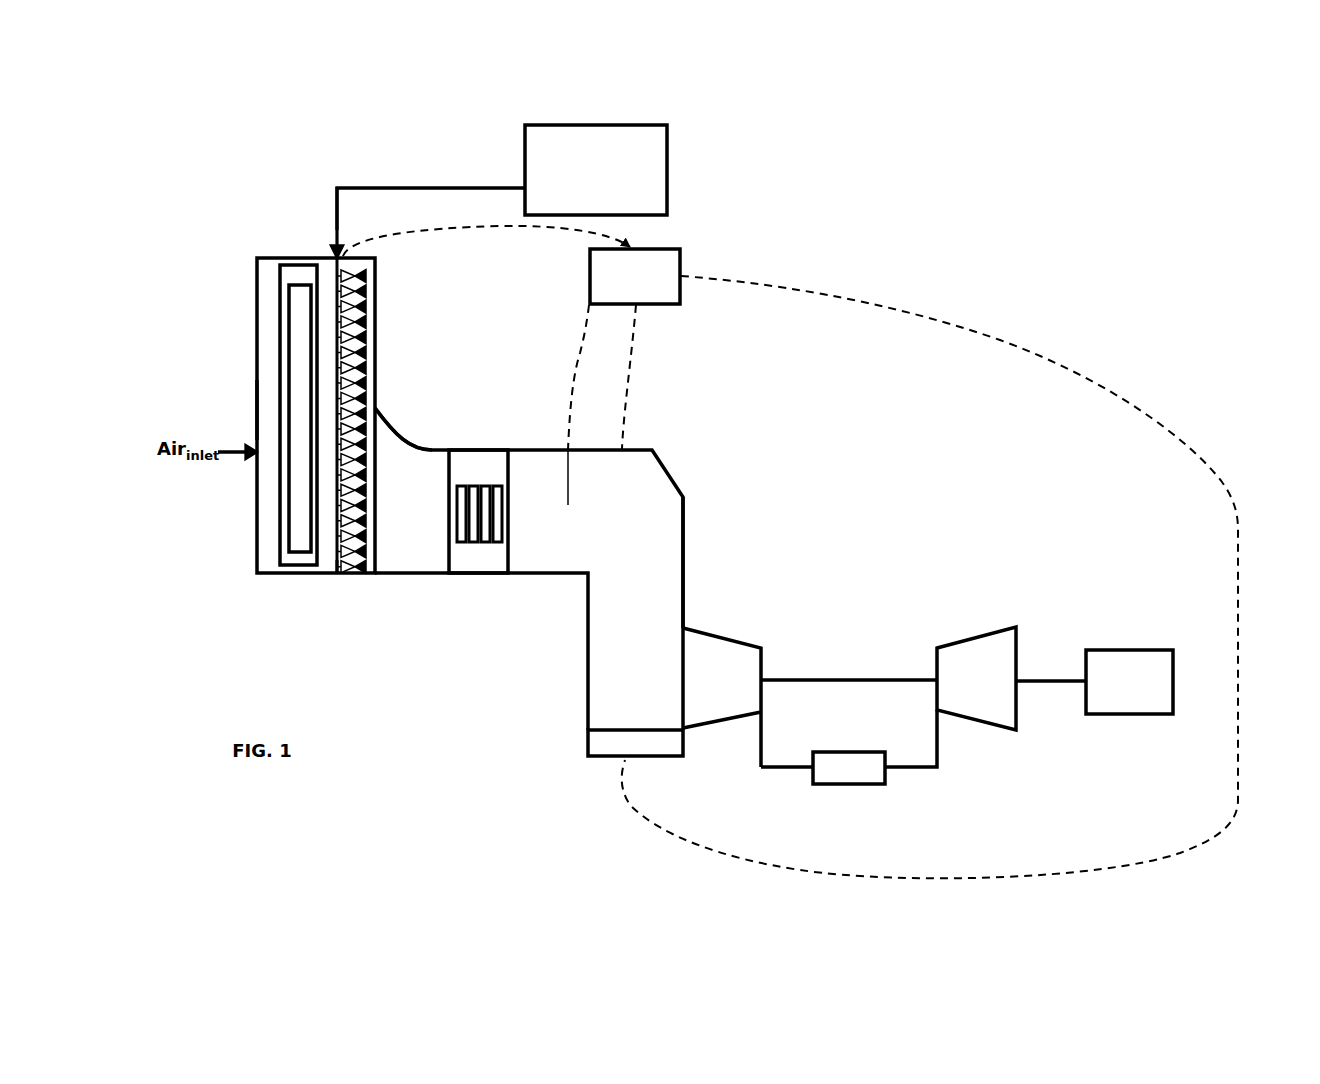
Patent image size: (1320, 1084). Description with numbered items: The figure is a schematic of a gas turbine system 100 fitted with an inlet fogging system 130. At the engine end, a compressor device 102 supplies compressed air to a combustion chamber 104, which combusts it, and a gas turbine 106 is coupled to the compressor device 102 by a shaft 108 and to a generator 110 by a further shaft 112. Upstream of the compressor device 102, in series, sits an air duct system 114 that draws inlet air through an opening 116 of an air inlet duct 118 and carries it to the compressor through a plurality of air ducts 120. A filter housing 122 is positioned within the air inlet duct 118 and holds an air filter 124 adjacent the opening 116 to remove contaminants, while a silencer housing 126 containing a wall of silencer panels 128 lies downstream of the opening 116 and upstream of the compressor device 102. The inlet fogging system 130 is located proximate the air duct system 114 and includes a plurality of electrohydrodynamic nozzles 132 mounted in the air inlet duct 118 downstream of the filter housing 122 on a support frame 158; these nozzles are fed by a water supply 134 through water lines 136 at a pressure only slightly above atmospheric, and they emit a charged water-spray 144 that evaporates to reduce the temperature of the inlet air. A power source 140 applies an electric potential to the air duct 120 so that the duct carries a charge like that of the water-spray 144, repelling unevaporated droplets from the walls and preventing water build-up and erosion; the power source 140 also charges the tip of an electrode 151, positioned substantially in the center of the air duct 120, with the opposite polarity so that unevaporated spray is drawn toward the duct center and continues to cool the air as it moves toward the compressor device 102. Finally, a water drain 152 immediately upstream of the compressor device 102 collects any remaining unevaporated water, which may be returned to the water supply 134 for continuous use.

The gas turbine system 100 is at (796, 248).
The compressor device 102 is at (728, 700).
The combustion chamber 104 is at (848, 765).
The gas turbine 106 is at (988, 705).
The shaft 108 is at (845, 680).
The generator 110 is at (1142, 700).
The shaft 112 is at (1040, 681).
The air duct system 114 is at (478, 336).
The opening 116 is at (255, 408).
The air inlet duct 118 is at (262, 278).
The air ducts 120 is at (400, 553).
The filter housing 122 is at (303, 277).
The air filter 124 is at (295, 345).
The silencer housing 126 is at (477, 466).
The silencer panels 128 is at (488, 542).
The inlet fogging system 130 is at (333, 118).
The electrohydrodynamic (EHD) nozzles 132 is at (347, 570).
The water supply 134 is at (596, 170).
The water lines 136 is at (415, 188).
The power source 140 is at (624, 349).
The water-spray 144 is at (368, 320).
The electrode 151 is at (568, 483).
The water drain 152 is at (602, 743).
The support frame 158 is at (334, 562).